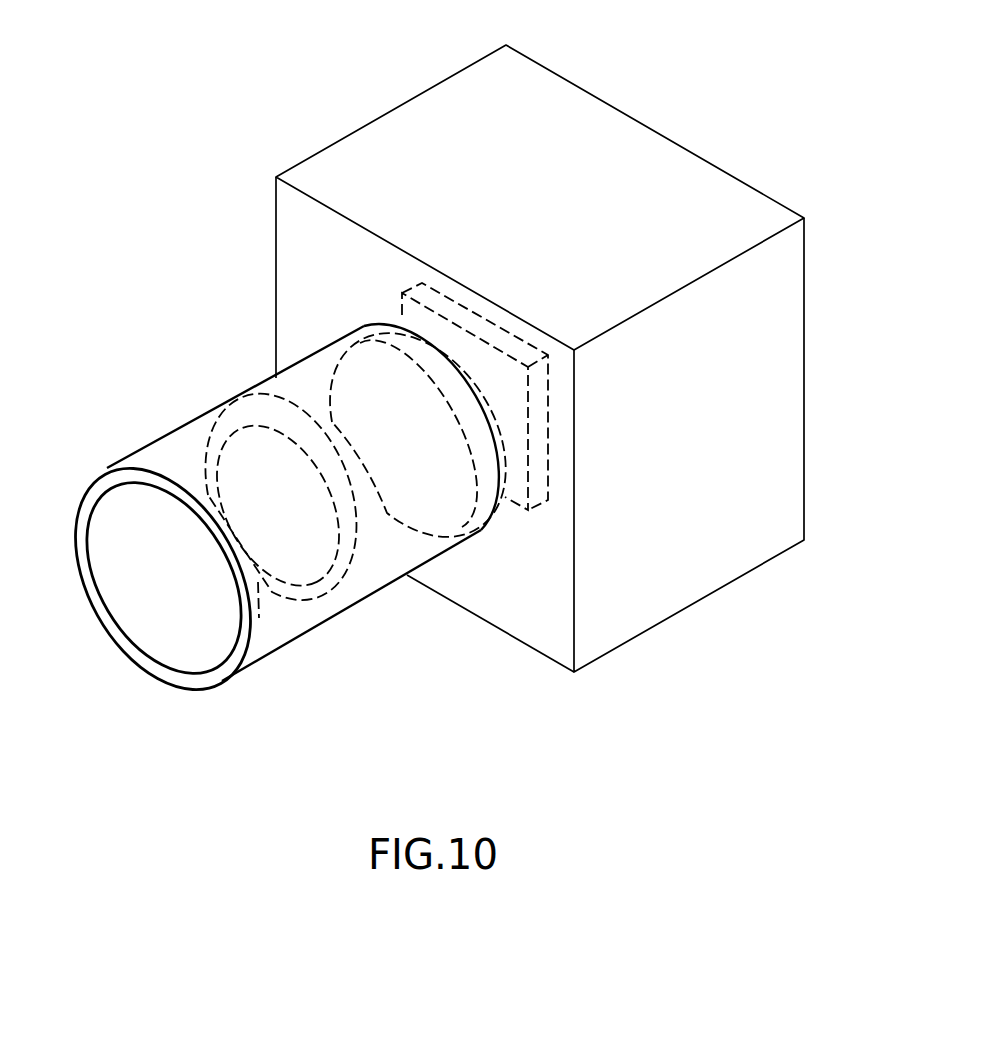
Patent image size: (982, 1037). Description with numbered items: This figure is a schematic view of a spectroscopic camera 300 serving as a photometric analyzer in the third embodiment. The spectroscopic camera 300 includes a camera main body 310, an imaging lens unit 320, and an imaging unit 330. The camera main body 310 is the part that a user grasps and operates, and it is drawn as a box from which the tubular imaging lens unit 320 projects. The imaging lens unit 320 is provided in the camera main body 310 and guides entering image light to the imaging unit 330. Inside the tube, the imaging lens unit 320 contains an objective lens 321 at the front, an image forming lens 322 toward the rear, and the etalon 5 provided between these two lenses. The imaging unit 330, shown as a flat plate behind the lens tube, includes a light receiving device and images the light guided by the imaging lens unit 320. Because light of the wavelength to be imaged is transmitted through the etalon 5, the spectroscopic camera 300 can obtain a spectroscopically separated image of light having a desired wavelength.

The spectroscopic camera 300 is at (280, 62).
The camera main body 310 is at (677, 162).
The imaging lens unit 320 is at (168, 453).
The objective lens 321 is at (127, 605).
The image forming lens 322 is at (435, 513).
The etalon 5 is at (311, 598).
The imaging unit 330 is at (548, 440).